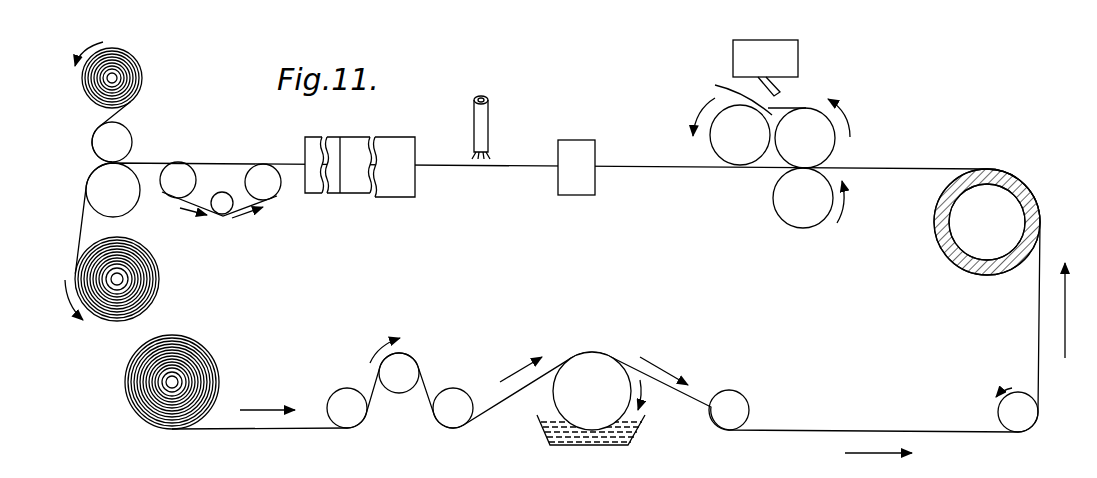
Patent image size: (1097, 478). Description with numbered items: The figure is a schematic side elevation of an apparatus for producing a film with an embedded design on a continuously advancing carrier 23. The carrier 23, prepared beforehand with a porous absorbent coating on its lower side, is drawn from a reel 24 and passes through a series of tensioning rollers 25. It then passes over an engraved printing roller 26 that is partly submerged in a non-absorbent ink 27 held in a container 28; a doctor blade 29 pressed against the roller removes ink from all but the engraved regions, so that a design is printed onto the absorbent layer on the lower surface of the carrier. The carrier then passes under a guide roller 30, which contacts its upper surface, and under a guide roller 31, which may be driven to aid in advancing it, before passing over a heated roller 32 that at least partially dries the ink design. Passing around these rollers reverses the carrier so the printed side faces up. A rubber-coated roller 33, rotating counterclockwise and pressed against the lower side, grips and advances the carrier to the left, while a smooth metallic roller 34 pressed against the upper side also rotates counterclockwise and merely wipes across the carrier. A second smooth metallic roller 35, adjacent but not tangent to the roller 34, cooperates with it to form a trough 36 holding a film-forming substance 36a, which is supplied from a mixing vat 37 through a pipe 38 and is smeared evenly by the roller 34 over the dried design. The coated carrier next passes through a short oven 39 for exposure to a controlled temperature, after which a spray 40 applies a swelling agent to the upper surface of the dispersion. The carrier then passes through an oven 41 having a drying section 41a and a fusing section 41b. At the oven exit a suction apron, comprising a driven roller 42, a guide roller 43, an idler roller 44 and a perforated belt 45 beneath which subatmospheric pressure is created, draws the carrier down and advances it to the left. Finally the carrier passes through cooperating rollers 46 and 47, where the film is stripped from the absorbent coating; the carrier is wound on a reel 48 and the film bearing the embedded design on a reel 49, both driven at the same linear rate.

The carrier 23 is at (303, 430).
The reel 24 is at (213, 362).
The tensioning rollers 25 is at (437, 417).
The engraved printing roller 26 is at (592, 372).
The non-absorbent ink 27 is at (582, 442).
The container 28 is at (645, 413).
The doctor blade 29 is at (551, 390).
The guide roller 30 is at (738, 390).
The guide roller 31 is at (1000, 414).
The heated roller 32 is at (970, 267).
The rubber-coated roller 33 is at (797, 227).
The roller 34 is at (835, 148).
The roller 35 is at (710, 143).
The trough 36 is at (842, 107).
The film-forming substance 36a is at (739, 95).
The mixing vat 37 is at (787, 55).
The pipe 38 is at (788, 100).
The short oven 39 is at (572, 153).
The spray 40 is at (482, 120).
The oven 41 is at (365, 122).
The drying section 41a is at (388, 150).
The fusing section 41b is at (313, 147).
The driven roller 42 is at (162, 192).
The guide roller 43 is at (270, 188).
The idler roller 44 is at (237, 180).
The perforated belt 45 is at (223, 216).
The roller 46 is at (123, 142).
The roller 47 is at (93, 183).
The reel 48 is at (148, 283).
The reel 49 is at (138, 63).